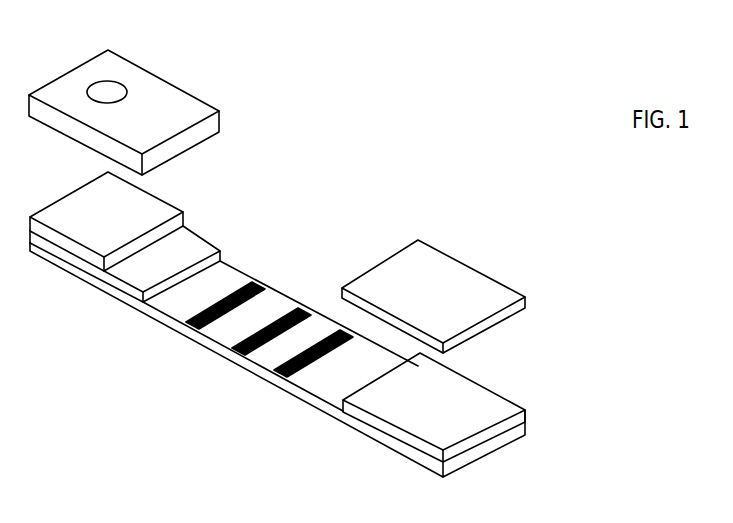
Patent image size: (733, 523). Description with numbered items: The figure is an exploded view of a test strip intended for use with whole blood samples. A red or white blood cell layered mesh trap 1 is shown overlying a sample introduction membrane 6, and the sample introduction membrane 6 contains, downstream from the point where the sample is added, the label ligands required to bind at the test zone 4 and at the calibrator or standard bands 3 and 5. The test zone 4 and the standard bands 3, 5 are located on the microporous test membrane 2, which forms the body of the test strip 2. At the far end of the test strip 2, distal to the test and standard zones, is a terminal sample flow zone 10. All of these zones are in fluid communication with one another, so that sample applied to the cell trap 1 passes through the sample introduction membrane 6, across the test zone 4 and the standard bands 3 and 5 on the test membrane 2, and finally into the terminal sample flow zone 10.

The red or white blood cell layered mesh trap 1 is at (147, 207).
The microporous test membrane 2 is at (243, 265).
The calibrator or standard band 3 is at (190, 326).
The test zone 4 is at (236, 352).
The calibrator or standard band 5 is at (278, 375).
The sample introduction membrane 6 is at (113, 90).
The terminal sample flow zone 10 is at (458, 270).